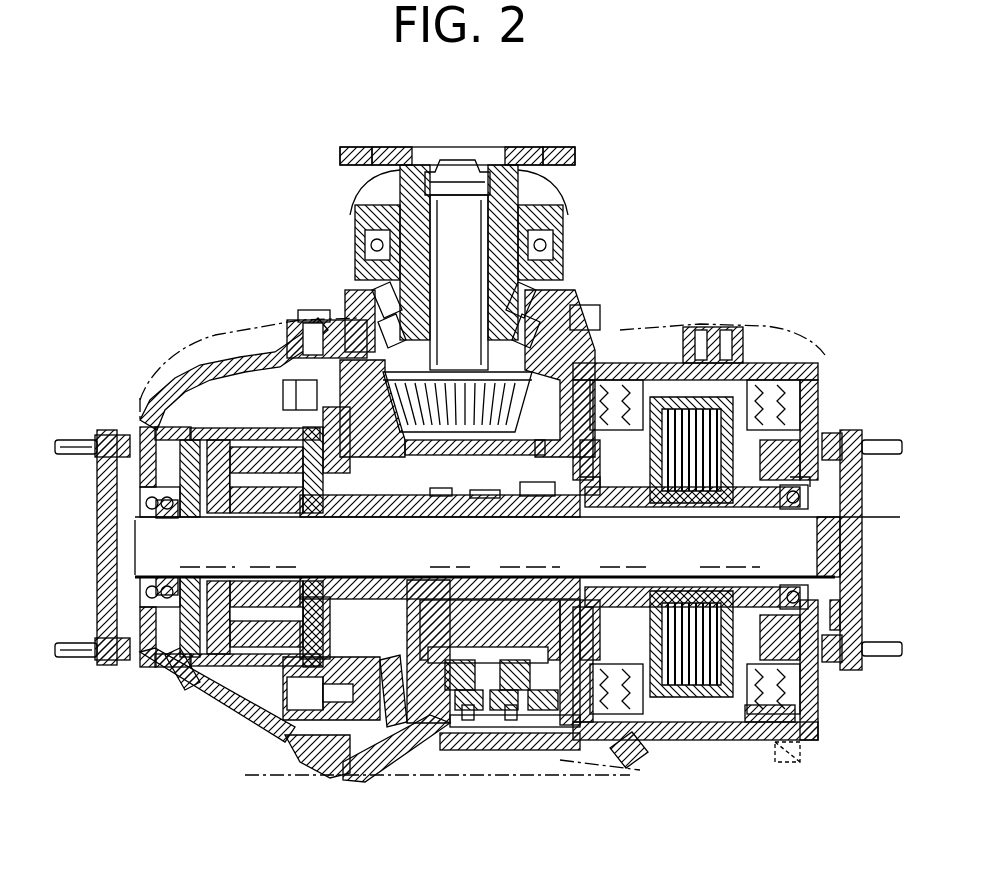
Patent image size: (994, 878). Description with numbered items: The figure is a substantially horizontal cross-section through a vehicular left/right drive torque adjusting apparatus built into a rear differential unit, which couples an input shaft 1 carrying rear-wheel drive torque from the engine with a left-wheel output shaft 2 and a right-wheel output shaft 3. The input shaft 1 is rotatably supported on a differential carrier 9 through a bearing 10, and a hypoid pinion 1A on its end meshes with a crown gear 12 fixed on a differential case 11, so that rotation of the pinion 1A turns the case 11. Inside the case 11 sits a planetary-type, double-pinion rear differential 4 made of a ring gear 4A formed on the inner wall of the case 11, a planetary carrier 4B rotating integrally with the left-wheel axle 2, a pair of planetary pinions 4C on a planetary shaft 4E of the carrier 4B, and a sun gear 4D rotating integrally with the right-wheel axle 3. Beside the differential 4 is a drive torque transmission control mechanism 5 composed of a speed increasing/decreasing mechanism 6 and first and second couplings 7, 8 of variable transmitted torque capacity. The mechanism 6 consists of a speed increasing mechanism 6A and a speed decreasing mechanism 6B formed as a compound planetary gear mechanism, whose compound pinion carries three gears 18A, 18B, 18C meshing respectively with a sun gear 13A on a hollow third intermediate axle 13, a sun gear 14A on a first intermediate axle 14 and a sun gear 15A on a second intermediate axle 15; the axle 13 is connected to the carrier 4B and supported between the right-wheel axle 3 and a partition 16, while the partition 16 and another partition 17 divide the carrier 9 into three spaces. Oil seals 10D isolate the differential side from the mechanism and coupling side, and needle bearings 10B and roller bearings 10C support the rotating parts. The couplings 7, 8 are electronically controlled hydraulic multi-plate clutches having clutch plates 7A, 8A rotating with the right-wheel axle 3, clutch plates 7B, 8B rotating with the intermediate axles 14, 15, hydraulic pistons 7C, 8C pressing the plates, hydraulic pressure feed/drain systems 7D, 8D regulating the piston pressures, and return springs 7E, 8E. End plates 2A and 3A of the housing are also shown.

The input shaft 1 is at (420, 318).
The hypoid pinion 1A is at (582, 332).
The left-wheel output shaft 2 is at (142, 668).
The left end plate 2A is at (100, 492).
The right-wheel output shaft 3 is at (798, 556).
The right end plate 3A is at (852, 530).
The rear differential 4 is at (150, 556).
The ring gear 4A is at (234, 448).
The planetary carrier 4B is at (138, 545).
The planetary pinions 4C is at (258, 430).
The sun gear 4D is at (245, 665).
The planetary shaft 4E is at (208, 662).
The drive torque transmission control mechanism 5 is at (568, 722).
The speed increasing/decreasing mechanism 6 is at (476, 735).
The speed increasing mechanism 6A is at (466, 722).
The speed decreasing mechanism 6B is at (512, 722).
The first coupling 7 is at (710, 742).
The clutch plates 7A is at (718, 582).
The clutch plates 7B is at (762, 606).
The hydraulic piston 7C is at (828, 688).
The hydraulic pressure feed/drain system 7D is at (788, 752).
The return spring 7E is at (765, 728).
The second coupling 8 is at (675, 742).
The clutch plates 8A is at (670, 588).
The clutch plates 8B is at (676, 632).
The hydraulic piston 8C is at (597, 722).
The hydraulic pressure feed/drain system 8D is at (638, 762).
The return spring 8E is at (603, 722).
The differential carrier 9 is at (220, 362).
The bearing 10 is at (548, 280).
The needle bearings 10B is at (656, 392).
The roller bearings 10C is at (532, 332).
The oil seals 10D is at (246, 512).
The differential case 11 is at (270, 365).
The crown gear 12 is at (352, 382).
The third intermediate axle 13 is at (356, 598).
The sun gear 13A is at (440, 498).
The first intermediate axle 14 is at (483, 520).
The sun gear 14A is at (483, 498).
The second intermediate axle 15 is at (606, 520).
The sun gear 15A is at (527, 505).
The partition 16 is at (420, 520).
The partition 17 is at (545, 520).
The gear 18A is at (455, 722).
The gear 18B is at (492, 722).
The gear 18C is at (550, 722).